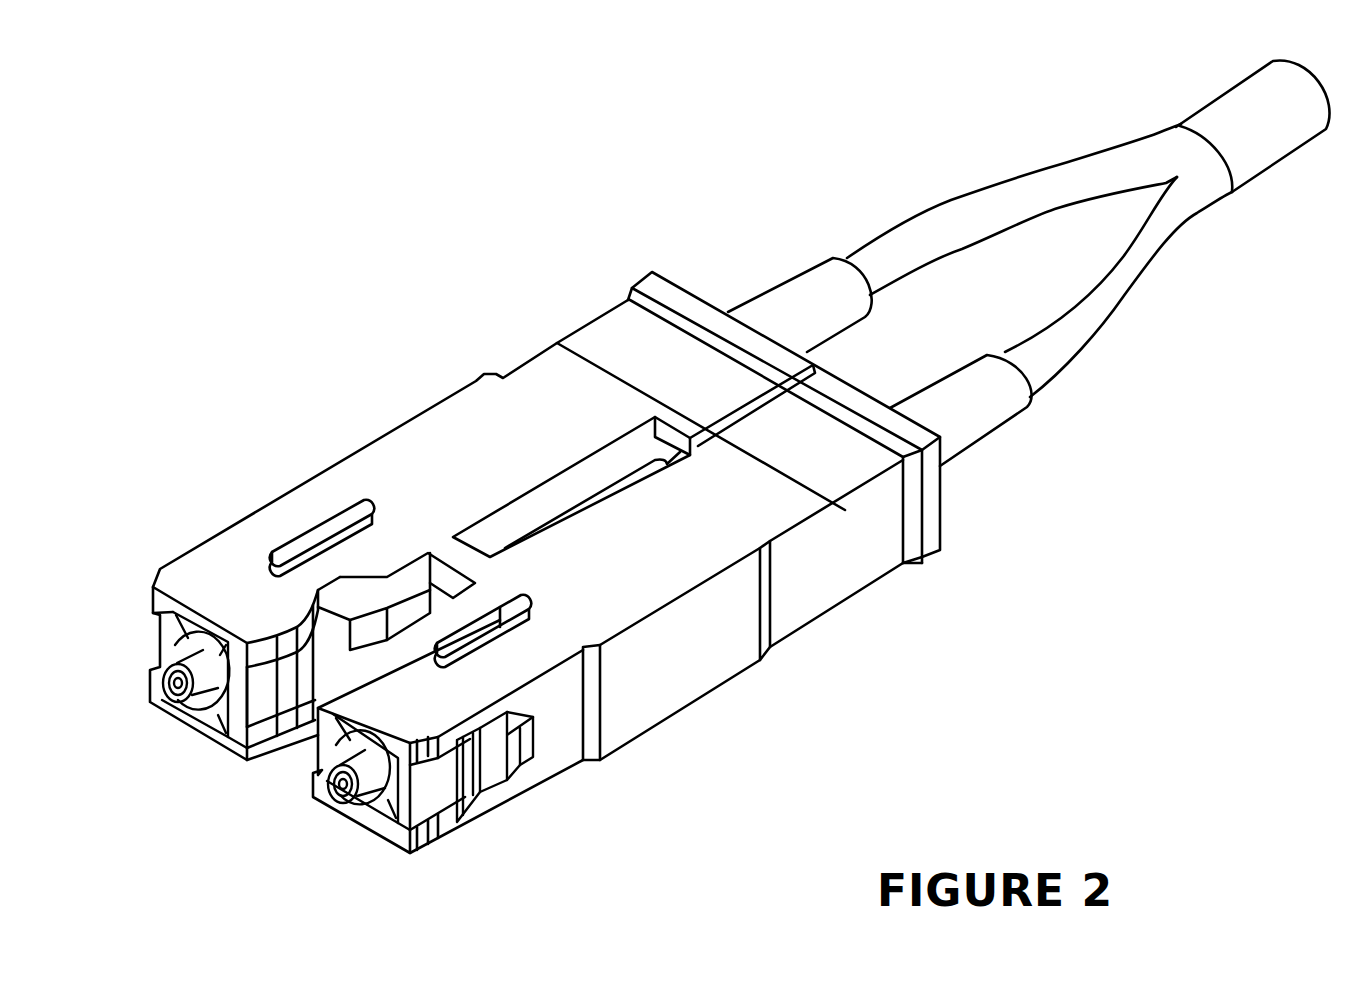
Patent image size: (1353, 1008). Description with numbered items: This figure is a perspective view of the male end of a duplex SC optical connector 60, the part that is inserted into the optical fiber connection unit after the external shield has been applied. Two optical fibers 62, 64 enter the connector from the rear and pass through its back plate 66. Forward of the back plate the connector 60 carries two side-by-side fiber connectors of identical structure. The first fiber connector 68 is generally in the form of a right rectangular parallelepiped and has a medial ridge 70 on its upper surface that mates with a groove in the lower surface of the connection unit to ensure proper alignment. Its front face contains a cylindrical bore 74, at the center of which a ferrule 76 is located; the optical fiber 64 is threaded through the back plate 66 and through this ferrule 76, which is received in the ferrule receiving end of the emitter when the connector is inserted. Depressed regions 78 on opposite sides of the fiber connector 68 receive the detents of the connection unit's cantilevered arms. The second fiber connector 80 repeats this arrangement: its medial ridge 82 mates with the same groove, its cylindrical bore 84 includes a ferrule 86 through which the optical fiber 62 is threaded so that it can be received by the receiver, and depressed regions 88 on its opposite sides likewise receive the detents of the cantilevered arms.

The male end of the duplex SC connector 60 is at (444, 321).
The optical fiber 62 is at (950, 220).
The optical fiber 64 is at (1080, 340).
The back plate 66 is at (932, 484).
The fiber connector 68 is at (487, 688).
The medial ridge 70 is at (533, 600).
The cylindrical bore 74 is at (380, 807).
The ferrule 76 is at (350, 803).
The depressed regions 78 is at (487, 767).
The fiber connector 80 is at (233, 545).
The medial ridge 82 is at (333, 514).
The cylindrical bore 84 is at (213, 700).
The ferrule 86 is at (176, 690).
The depressed regions 88 is at (335, 635).